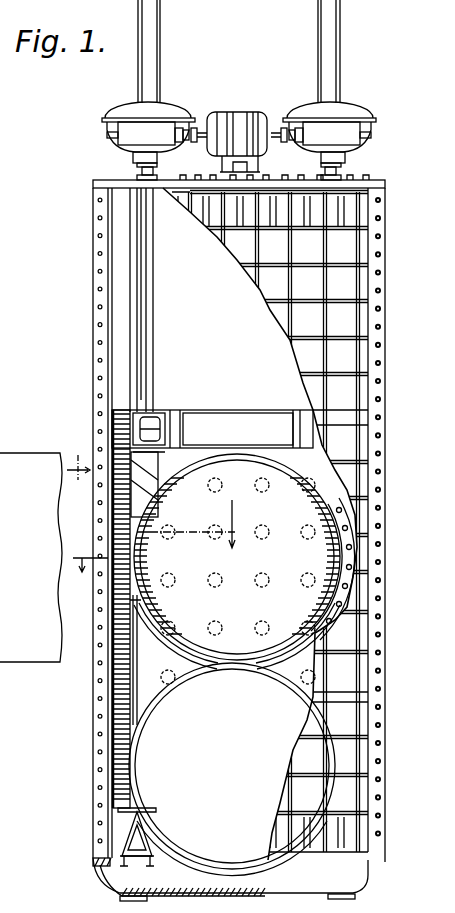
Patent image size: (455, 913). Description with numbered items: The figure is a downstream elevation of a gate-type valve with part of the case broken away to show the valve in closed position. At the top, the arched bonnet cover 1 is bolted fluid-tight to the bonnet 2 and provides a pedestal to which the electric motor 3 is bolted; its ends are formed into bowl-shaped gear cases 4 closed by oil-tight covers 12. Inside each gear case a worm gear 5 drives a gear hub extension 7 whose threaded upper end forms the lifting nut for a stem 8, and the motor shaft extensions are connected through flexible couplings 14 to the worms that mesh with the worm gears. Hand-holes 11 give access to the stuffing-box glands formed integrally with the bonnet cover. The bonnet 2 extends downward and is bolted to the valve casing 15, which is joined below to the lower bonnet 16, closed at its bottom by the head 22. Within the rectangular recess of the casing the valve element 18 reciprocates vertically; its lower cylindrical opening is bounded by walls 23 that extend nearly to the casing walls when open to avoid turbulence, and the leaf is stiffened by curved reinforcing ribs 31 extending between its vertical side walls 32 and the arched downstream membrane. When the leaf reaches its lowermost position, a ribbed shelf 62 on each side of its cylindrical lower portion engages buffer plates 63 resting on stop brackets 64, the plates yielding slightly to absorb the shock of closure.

The bonnet cover 1 is at (115, 172).
The bonnet 2 is at (268, 283).
The electric motor 3 is at (240, 114).
The gear cases 4 is at (137, 125).
The worm gear 5 is at (78, 479).
The gear hub extension 7 is at (31, 544).
The stem 8 is at (154, 536).
The hand-holes 11 is at (135, 163).
The oil-tight covers 12 is at (167, 112).
The flexible couplings 14 is at (196, 128).
The valve casing 15 is at (113, 430).
The lower bonnet 16 is at (310, 768).
The valve element 18 is at (243, 647).
The head 22 is at (115, 873).
The walls 23 is at (155, 705).
The reinforcing ribs 31 is at (150, 493).
The vertical side walls 32 is at (135, 647).
The ribbed shelf 62 is at (130, 810).
The buffer plates 63 is at (130, 832).
The stop brackets 64 is at (145, 856).